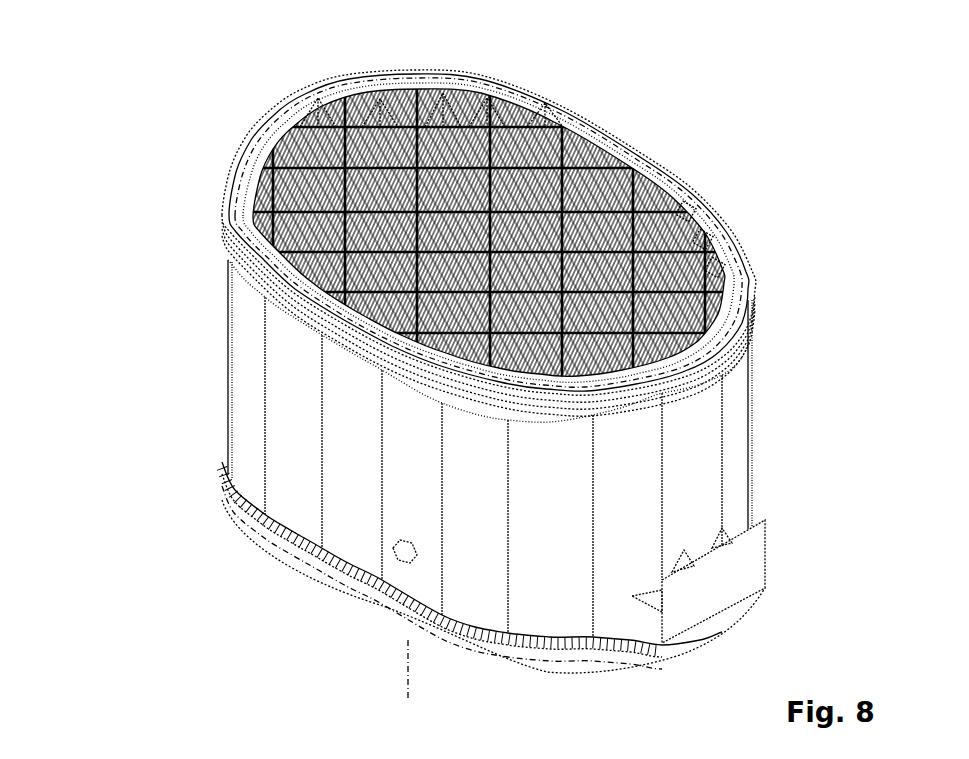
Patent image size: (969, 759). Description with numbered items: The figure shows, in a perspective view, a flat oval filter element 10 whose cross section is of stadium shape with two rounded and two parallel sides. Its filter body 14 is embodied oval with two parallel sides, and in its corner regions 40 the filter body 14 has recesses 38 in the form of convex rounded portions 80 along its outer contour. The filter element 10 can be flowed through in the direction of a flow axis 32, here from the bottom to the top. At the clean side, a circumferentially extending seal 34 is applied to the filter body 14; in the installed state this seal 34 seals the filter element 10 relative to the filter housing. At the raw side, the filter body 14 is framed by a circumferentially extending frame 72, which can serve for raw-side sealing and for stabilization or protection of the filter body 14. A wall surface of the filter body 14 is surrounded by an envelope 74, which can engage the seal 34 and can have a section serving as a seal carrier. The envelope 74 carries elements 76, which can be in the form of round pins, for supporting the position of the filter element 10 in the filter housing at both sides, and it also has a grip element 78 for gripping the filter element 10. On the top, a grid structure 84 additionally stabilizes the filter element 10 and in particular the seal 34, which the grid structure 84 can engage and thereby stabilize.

The filter element 10 is at (710, 115).
The filter body 14 is at (375, 183).
The flow axis 32 is at (408, 673).
The seal 34 is at (230, 216).
The recesses 38 is at (418, 48).
The corner regions 40 is at (488, 193).
The frame 72 is at (295, 558).
The envelope 74 is at (728, 480).
The element 76 is at (393, 550).
The grip element 78 is at (760, 573).
The convex rounded portions 80 is at (569, 394).
The grid structure 84 is at (563, 210).